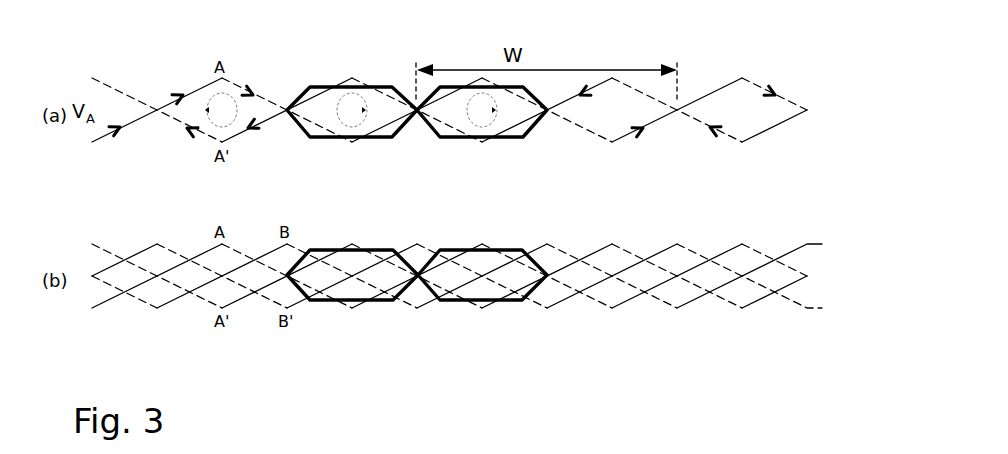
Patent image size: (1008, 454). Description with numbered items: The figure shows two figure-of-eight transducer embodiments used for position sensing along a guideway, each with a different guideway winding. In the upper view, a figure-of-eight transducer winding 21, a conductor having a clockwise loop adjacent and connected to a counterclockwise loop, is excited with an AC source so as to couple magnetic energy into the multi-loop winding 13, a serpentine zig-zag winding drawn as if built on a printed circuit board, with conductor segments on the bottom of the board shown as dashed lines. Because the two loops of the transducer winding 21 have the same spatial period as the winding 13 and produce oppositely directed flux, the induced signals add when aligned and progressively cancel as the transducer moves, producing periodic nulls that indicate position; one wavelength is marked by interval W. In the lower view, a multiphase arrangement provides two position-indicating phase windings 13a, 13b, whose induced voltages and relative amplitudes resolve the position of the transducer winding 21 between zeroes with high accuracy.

In FIG. 3A, the multi-loop winding 13 is at (165, 103).
In FIG. 3B, the first phase winding 13a is at (167, 267).
In FIG. 3B, the second phase winding 13b is at (235, 267).
In FIG. 3A, the figure-of-eight transducer winding 21 is at (323, 87).
In FIG. 3B, the figure-of-eight transducer winding 21 is at (375, 251).